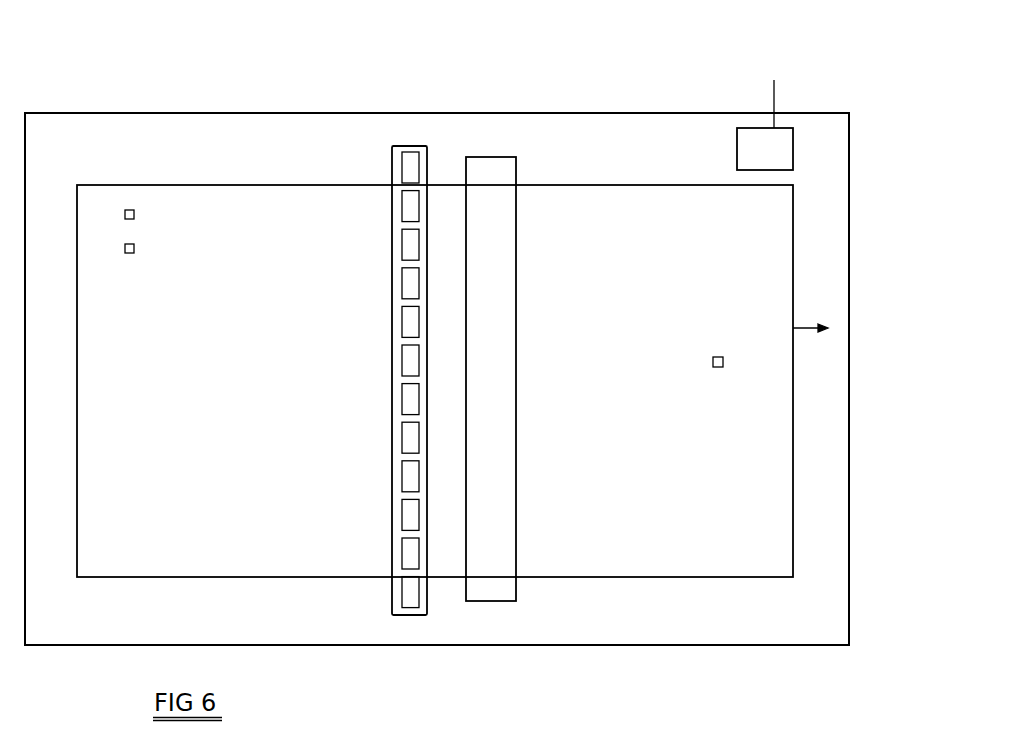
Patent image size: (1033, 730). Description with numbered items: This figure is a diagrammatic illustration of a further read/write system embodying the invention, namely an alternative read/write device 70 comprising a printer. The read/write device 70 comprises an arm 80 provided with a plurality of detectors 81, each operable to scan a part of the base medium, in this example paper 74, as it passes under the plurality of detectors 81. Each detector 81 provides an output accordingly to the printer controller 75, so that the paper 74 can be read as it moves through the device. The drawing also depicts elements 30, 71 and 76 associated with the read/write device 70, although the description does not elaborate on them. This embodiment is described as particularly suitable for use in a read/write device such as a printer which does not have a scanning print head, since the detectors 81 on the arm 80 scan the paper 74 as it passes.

The RFID tag 30 is at (131, 209).
The read/write device 70 is at (615, 113).
The reader bar 71 is at (492, 165).
The paper 74 is at (626, 563).
The printer controller 75 is at (766, 143).
The antenna 76 is at (774, 92).
The arm 80 is at (420, 146).
The detectors 81 is at (400, 210).